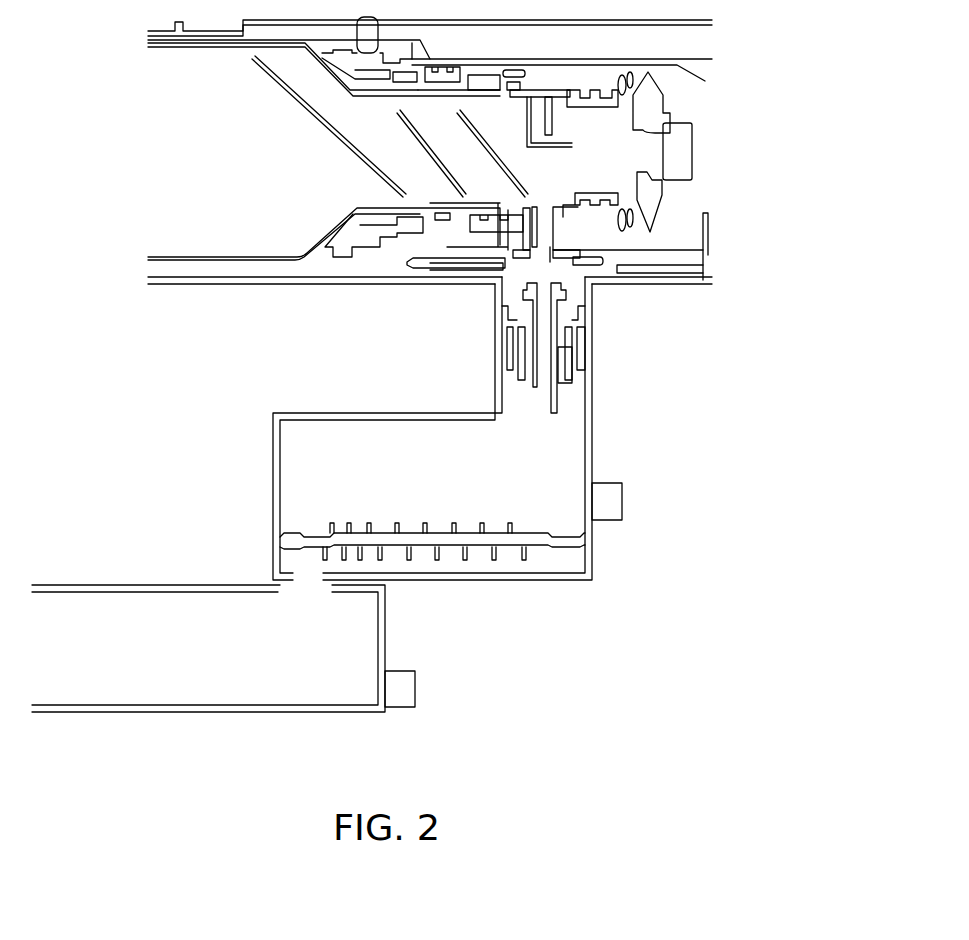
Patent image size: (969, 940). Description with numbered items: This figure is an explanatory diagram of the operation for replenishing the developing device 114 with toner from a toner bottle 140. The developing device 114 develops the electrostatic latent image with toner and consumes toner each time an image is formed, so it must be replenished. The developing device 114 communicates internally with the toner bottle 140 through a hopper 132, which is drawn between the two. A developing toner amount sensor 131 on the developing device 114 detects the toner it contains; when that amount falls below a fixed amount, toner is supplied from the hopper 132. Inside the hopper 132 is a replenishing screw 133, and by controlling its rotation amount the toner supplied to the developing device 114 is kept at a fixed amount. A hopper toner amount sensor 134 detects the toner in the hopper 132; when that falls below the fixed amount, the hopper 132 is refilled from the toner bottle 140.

The toner bottle 140 is at (145, 144).
The developing device 114 is at (145, 486).
The hopper 132 is at (273, 457).
The replenishing screw 133 is at (422, 542).
The hopper toner amount sensor 134 is at (622, 503).
The developing toner amount sensor 131 is at (403, 687).